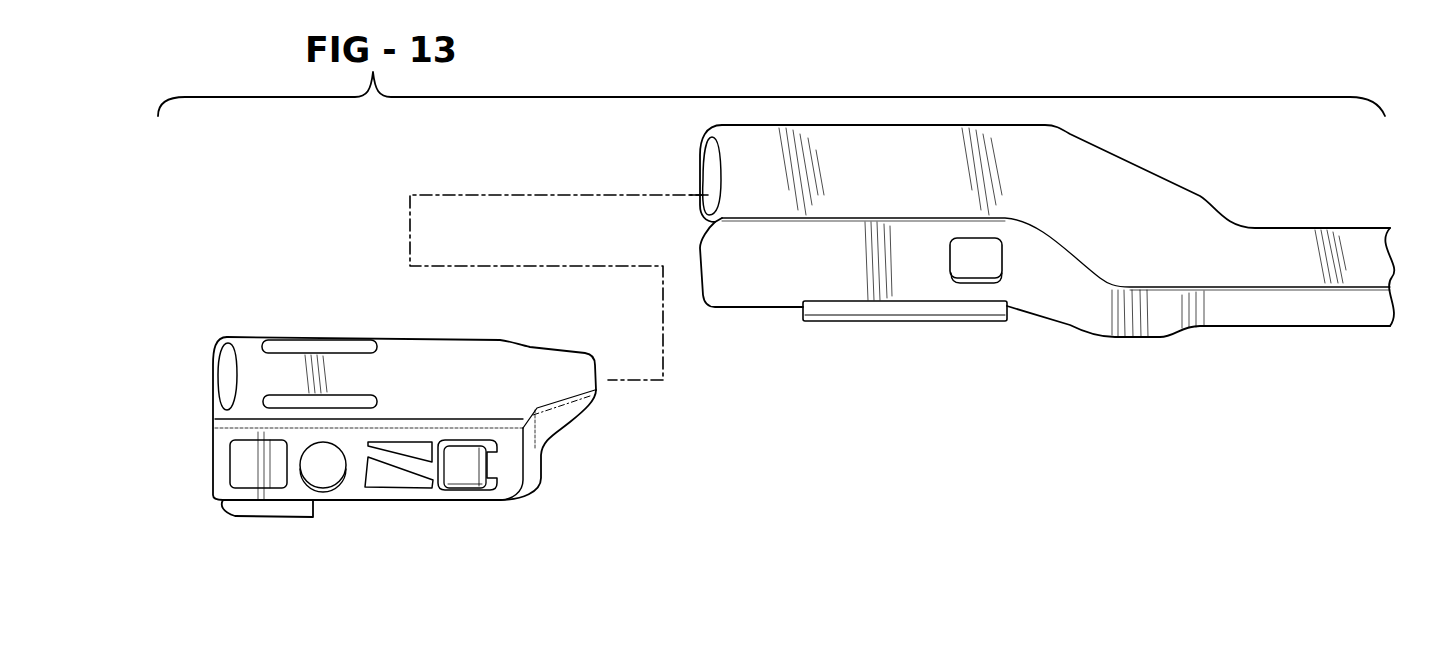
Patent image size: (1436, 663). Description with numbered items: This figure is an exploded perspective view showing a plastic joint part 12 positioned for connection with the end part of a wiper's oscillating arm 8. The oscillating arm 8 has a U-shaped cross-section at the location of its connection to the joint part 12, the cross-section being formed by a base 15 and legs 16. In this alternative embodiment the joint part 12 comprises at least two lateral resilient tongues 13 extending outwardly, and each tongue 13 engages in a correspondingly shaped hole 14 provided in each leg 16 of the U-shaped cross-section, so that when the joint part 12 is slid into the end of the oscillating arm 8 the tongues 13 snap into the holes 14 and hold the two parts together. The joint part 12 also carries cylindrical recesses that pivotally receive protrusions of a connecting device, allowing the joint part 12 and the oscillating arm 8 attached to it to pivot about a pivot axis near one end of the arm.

The oscillating arm 8 is at (907, 124).
The joint part 12 is at (208, 457).
The resilient tongue 13 is at (475, 456).
The hole 14 is at (978, 243).
The base 15 is at (758, 143).
The leg 16 is at (722, 284).